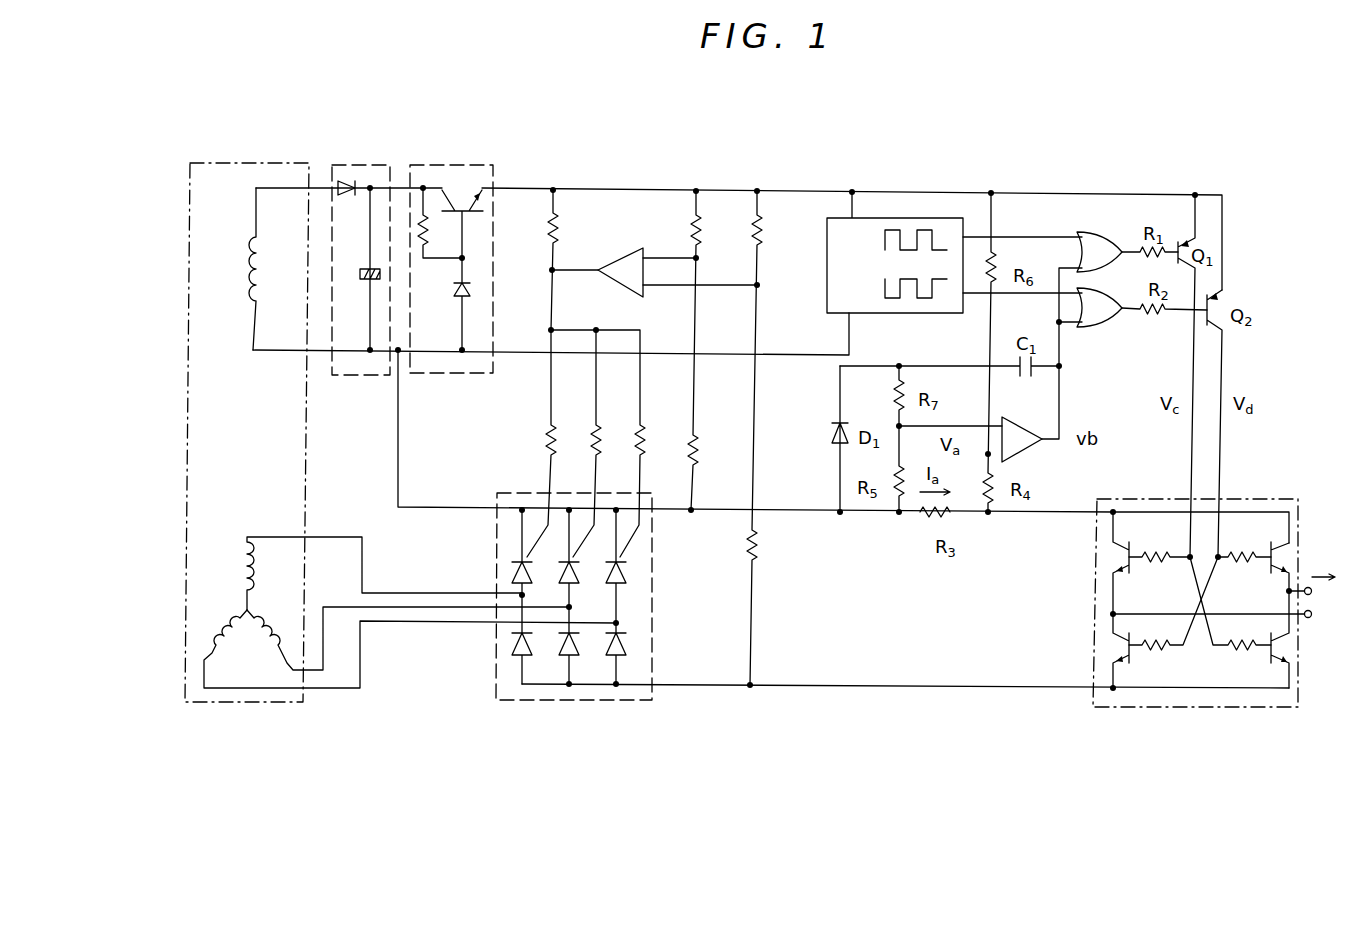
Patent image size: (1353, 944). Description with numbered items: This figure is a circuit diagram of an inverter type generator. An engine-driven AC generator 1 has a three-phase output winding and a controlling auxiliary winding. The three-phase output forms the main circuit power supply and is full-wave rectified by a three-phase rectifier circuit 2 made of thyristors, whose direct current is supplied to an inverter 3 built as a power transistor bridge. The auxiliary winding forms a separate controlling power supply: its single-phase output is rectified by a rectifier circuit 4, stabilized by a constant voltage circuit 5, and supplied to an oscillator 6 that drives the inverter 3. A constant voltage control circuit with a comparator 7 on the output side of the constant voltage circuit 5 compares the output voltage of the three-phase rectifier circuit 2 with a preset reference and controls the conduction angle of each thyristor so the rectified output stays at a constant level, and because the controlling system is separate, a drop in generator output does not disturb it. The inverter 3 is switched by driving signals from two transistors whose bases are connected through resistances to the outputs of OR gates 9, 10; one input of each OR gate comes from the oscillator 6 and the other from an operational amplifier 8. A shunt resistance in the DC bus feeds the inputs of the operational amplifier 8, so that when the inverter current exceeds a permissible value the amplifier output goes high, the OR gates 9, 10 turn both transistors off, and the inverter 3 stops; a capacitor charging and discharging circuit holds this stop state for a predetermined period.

The AC generator 1 is at (265, 162).
The three-phase rectifier circuit 2 is at (654, 608).
The inverter 3 is at (1280, 497).
The rectifier circuit 4 is at (358, 163).
The constant voltage circuit 5 is at (447, 162).
The oscillator 6 is at (868, 314).
The comparator 7 is at (609, 258).
The operational amplifier 8 is at (1028, 452).
The OR gate 9 is at (1096, 232).
The OR gate 10 is at (1095, 332).